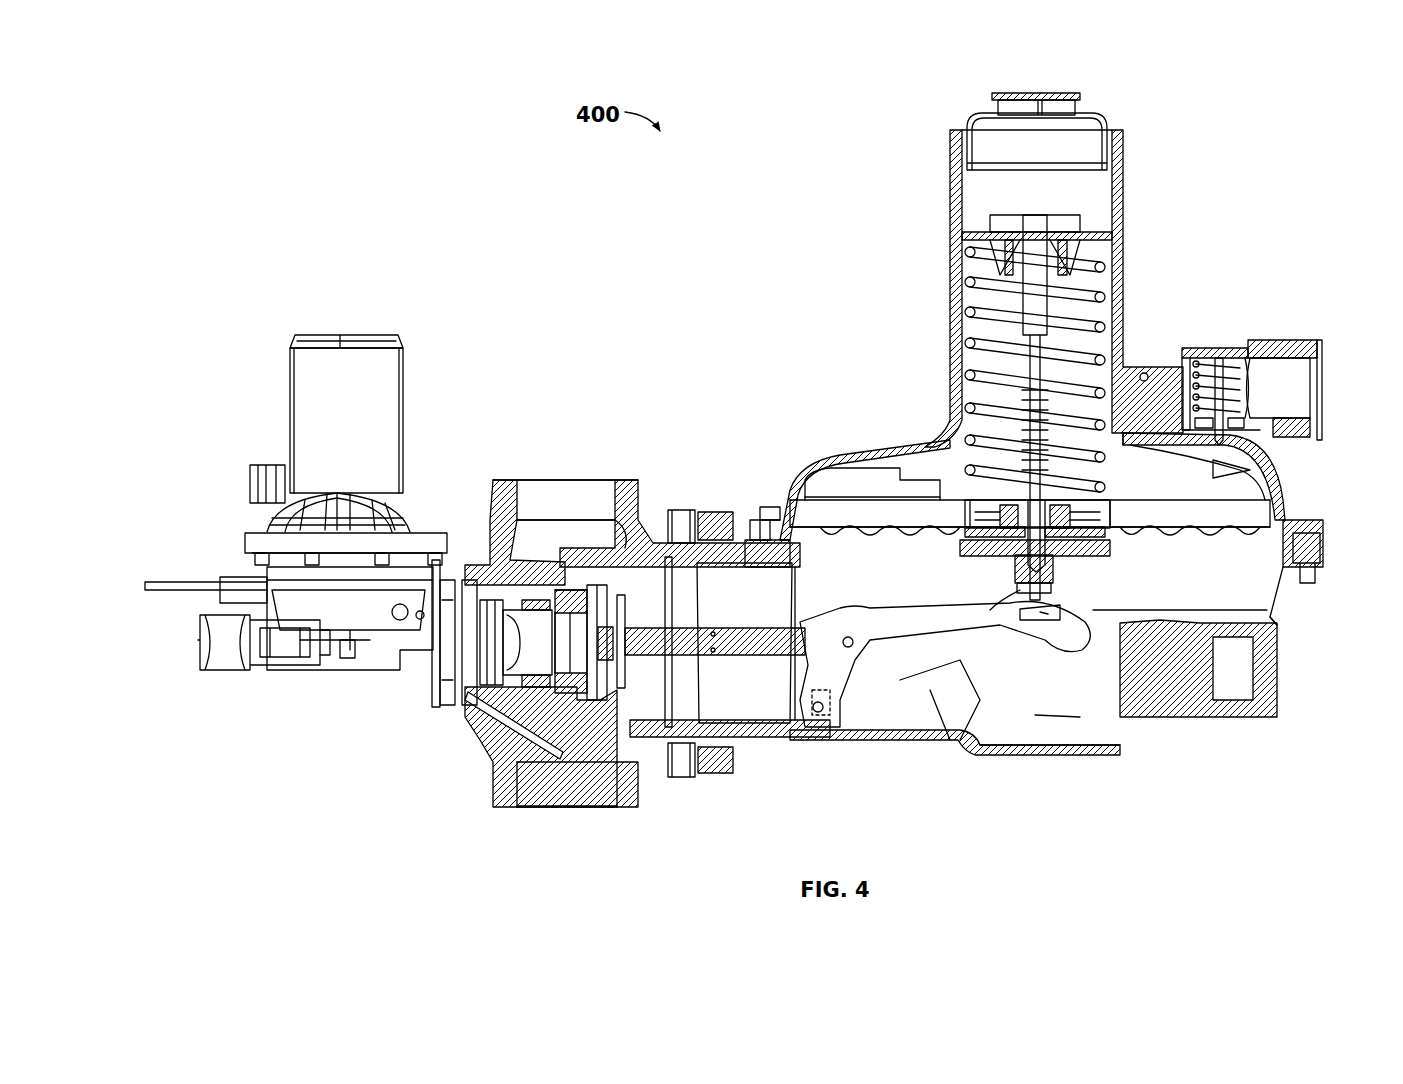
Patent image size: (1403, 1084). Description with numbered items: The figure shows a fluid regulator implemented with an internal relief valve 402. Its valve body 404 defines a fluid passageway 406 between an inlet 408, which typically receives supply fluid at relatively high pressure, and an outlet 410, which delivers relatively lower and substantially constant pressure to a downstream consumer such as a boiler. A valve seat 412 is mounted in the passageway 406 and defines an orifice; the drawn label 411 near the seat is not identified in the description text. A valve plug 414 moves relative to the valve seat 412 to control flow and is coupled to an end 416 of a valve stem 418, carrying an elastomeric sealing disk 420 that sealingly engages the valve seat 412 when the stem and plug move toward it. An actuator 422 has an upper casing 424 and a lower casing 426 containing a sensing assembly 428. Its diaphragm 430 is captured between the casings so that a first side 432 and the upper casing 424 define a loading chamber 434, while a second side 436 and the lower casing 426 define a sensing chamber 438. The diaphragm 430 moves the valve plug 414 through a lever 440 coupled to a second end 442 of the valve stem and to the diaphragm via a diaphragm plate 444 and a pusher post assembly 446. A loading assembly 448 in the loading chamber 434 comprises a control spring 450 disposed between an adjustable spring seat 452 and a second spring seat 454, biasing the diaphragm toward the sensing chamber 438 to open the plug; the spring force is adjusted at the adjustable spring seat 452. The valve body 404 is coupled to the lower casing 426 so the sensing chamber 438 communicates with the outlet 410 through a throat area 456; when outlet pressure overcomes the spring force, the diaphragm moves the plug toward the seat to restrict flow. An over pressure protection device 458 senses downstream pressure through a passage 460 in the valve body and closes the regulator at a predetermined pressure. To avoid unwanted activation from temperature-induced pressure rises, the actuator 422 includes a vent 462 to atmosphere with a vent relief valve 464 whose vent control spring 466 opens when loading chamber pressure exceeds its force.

The internal relief valve 402 is at (988, 493).
The valve body 404 is at (490, 795).
The fluid passageway 406 is at (555, 559).
The inlet 408 is at (555, 479).
The outlet 410 is at (590, 805).
The valve seat 411 is at (550, 620).
The valve seat 412 is at (573, 607).
The valve plug 414 is at (620, 700).
The end of the valve stem 416 is at (650, 616).
The valve stem 418 is at (757, 633).
The sealing disk 420 is at (575, 638).
The actuator 422 is at (833, 301).
The upper casing 424 is at (946, 372).
The lower casing 426 is at (985, 745).
The sensing assembly 428 is at (1207, 588).
The diaphragm 430 is at (837, 452).
The first side of the diaphragm 432 is at (810, 478).
The loading chamber 434 is at (1136, 490).
The second side of the diaphragm 436 is at (897, 543).
The sensing chamber 438 is at (1046, 675).
The lever 440 is at (920, 653).
The second end of the valve stem 442 is at (792, 645).
The diaphragm plate 444 is at (1080, 557).
The pusher post assembly 446 is at (1001, 581).
The loading assembly 448 is at (976, 208).
The control spring 450 is at (958, 310).
The adjustable spring seat 452 is at (965, 236).
The second spring seat 454 is at (866, 510).
The throat area 456 is at (735, 725).
The over pressure protection device 458 is at (281, 294).
The passage 460 is at (497, 720).
The vent 462 is at (1321, 391).
The vent relief valve 464 is at (1216, 335).
The vent control spring 466 is at (1243, 365).